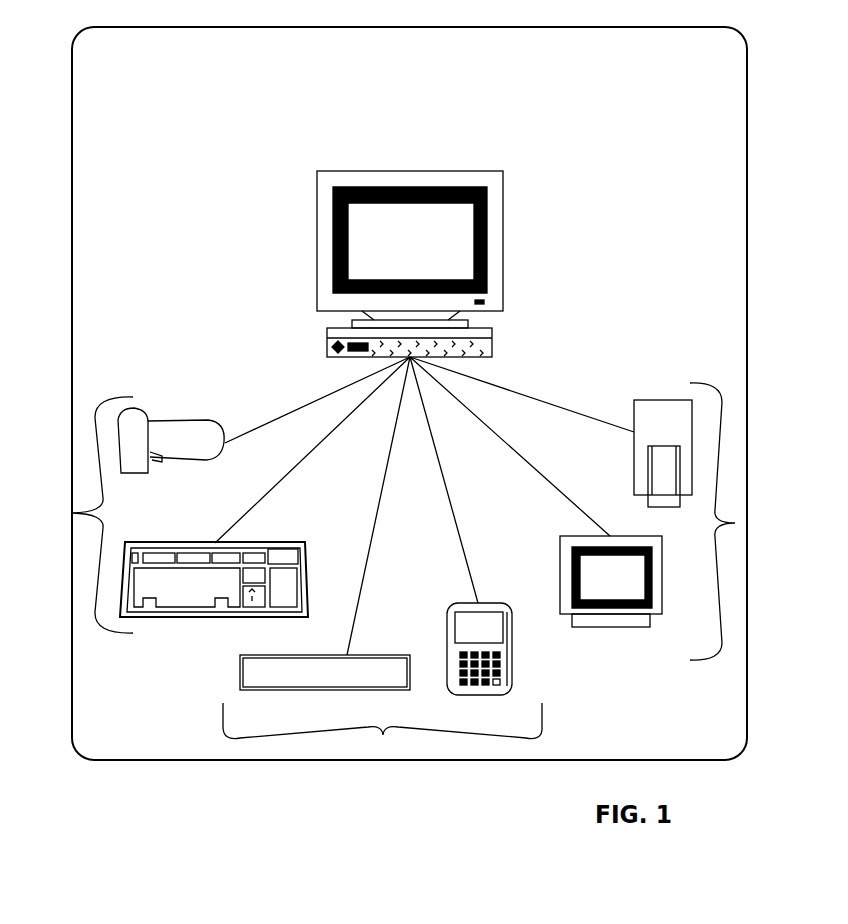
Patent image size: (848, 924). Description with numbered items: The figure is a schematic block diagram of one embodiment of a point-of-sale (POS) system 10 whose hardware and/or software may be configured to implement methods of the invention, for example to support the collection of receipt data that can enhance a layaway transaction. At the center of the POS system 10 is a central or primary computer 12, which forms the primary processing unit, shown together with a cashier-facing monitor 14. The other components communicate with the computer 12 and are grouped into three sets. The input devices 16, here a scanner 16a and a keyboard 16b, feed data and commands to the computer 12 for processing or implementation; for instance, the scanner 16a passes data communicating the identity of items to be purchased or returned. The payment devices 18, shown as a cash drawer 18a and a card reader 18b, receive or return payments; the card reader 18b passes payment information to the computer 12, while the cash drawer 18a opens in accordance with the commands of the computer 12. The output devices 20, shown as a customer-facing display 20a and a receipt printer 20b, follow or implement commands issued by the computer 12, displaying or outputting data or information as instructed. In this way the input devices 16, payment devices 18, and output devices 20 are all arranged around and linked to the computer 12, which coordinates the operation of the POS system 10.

The point-of-sale (POS) system 10 is at (582, 96).
The computer 12 is at (512, 322).
The monitor 14 is at (298, 208).
The input devices 16 is at (72, 513).
The scanner 16a is at (183, 440).
The keyboard 16b is at (280, 552).
The payment devices 18 is at (383, 735).
The cash drawer 18a is at (323, 675).
The card reader 18b is at (470, 605).
The output devices 20 is at (735, 523).
The customer-facing display 20a is at (607, 590).
The receipt printer 20b is at (652, 420).